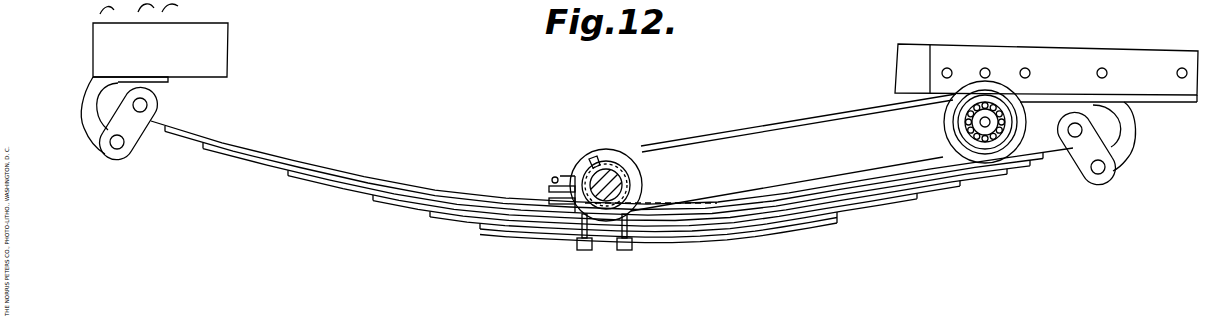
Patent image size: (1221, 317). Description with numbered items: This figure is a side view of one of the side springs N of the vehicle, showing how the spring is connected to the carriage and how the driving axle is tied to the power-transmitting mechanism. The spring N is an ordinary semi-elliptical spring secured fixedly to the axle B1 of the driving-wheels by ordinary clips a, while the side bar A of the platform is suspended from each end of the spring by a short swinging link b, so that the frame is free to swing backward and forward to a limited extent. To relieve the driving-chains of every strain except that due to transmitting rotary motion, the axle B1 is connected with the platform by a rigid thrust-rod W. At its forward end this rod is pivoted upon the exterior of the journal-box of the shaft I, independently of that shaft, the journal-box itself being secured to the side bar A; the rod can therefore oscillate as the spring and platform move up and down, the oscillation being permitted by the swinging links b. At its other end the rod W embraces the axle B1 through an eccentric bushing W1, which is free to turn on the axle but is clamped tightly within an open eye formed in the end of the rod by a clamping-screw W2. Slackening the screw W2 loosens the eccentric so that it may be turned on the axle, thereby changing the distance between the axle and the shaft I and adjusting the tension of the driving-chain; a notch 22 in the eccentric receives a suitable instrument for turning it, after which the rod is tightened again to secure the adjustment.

The side bar of the platform A is at (645, 65).
The swinging link b is at (130, 125).
The side spring N is at (440, 201).
The thrust-rod W is at (770, 152).
The eccentric bushing W1 is at (608, 157).
The axle of the driving-wheels B1 is at (596, 177).
The notch 22 is at (594, 160).
The clamping-screw W2 is at (538, 189).
The clip a is at (583, 230).
The shaft section I is at (987, 128).